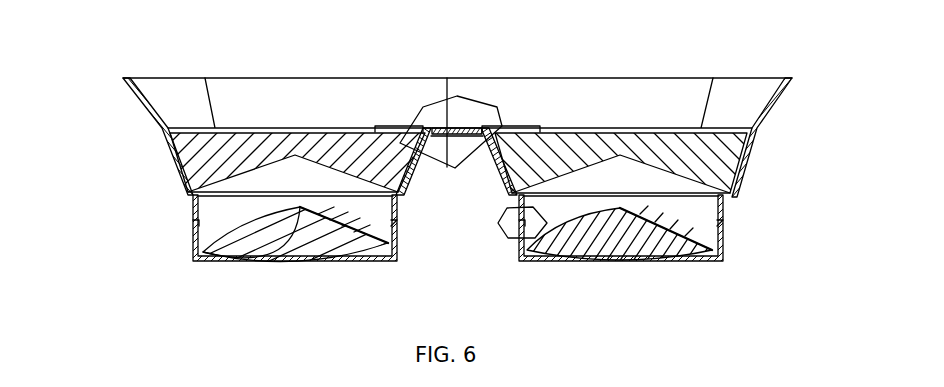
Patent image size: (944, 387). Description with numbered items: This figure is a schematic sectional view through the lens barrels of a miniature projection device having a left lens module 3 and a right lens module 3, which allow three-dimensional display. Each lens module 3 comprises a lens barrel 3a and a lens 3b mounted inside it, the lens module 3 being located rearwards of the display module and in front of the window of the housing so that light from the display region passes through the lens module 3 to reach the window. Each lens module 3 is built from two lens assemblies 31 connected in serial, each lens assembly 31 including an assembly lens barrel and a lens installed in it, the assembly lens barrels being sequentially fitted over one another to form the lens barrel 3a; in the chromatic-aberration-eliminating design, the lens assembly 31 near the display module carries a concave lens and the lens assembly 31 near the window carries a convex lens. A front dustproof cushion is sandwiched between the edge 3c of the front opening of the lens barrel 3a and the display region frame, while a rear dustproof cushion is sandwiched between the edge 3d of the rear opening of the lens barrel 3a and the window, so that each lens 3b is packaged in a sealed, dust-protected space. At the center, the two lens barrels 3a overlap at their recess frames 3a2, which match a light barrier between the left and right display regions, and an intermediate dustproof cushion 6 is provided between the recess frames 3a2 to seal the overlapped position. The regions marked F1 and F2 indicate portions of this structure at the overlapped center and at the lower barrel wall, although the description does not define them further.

The lens module 3 is at (140, 135).
The edge of front opening of lens barrel 3c is at (303, 78).
The lens 3b is at (263, 240).
The lens barrel 3a is at (193, 240).
The edge of rear opening of lens barrel 3d is at (217, 263).
The recess frame 3a2 is at (481, 131).
The intermediate dustproof cushion 6 is at (463, 127).
The first flow region F1 is at (428, 113).
The second flow region F2 is at (512, 233).
The lens assembly 31 is at (715, 160).